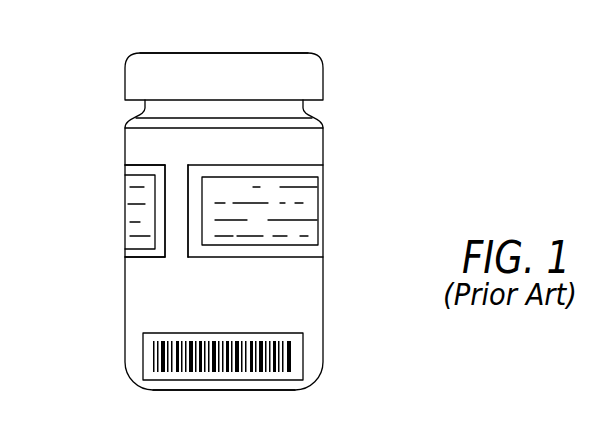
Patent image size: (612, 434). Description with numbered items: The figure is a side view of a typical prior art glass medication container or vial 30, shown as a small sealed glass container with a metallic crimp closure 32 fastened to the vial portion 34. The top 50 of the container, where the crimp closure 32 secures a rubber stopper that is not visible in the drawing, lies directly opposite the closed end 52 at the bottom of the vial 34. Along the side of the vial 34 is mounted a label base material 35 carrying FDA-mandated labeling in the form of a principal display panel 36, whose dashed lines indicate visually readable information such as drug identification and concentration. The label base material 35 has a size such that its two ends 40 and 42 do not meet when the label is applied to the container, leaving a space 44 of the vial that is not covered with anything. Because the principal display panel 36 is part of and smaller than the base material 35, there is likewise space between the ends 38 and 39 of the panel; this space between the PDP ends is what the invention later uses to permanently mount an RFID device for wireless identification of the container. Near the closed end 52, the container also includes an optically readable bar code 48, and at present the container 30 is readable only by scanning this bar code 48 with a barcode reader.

The medication container 30 is at (388, 133).
The crimp closure 32 is at (123, 87).
The top 50 is at (282, 53).
The vial portion 34 is at (125, 150).
The closed end 52 is at (182, 390).
The label base material 35 is at (273, 257).
The principal display panel 36 is at (308, 202).
The end of PDP 38 is at (207, 187).
The end of PDP 39 is at (155, 186).
The end of label base material 40 is at (165, 212).
The end of label base material 42 is at (186, 233).
The space 44 is at (178, 233).
The bar code 48 is at (303, 357).